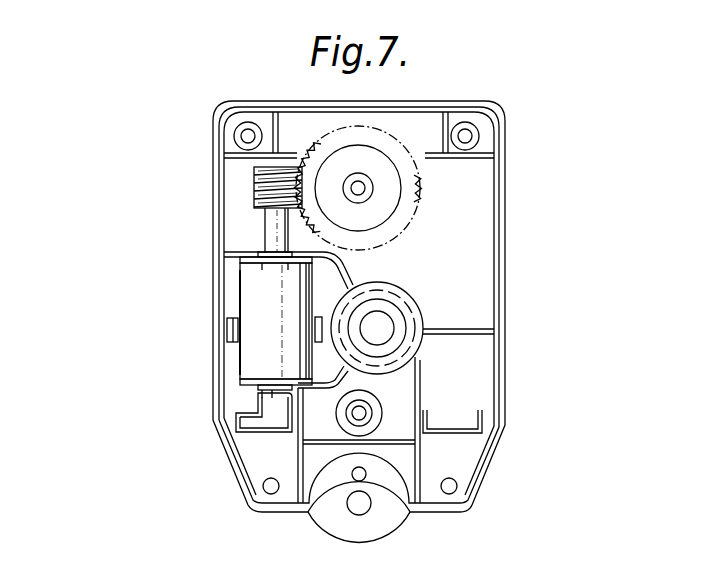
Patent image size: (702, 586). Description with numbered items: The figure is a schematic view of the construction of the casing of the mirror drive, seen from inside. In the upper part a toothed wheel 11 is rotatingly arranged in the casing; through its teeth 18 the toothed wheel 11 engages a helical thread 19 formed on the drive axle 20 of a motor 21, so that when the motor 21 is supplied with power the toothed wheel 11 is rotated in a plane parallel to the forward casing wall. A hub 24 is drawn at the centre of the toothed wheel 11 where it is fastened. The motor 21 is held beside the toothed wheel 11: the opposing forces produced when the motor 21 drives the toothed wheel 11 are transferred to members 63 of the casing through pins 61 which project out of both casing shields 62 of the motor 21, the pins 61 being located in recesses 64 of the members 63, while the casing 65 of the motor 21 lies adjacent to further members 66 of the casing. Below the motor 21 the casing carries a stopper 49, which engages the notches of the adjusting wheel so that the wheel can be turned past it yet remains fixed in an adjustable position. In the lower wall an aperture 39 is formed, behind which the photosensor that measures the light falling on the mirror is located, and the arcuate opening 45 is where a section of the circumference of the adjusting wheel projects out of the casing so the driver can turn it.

The toothed wheel 11 is at (364, 161).
The teeth 18 is at (311, 150).
The helical thread 19 is at (270, 167).
The drive axle 20 is at (272, 232).
The motor 21 is at (258, 303).
The gear axle hub 24 is at (358, 188).
The aperture 39 is at (364, 506).
The opening 45 is at (332, 533).
The stopper 49 is at (380, 412).
The pins 61 is at (260, 275).
The casing shields 62 is at (257, 255).
The members 63 is at (245, 254).
The recesses 64 is at (290, 395).
The casing 65 is at (240, 353).
The further members 66 is at (227, 325).